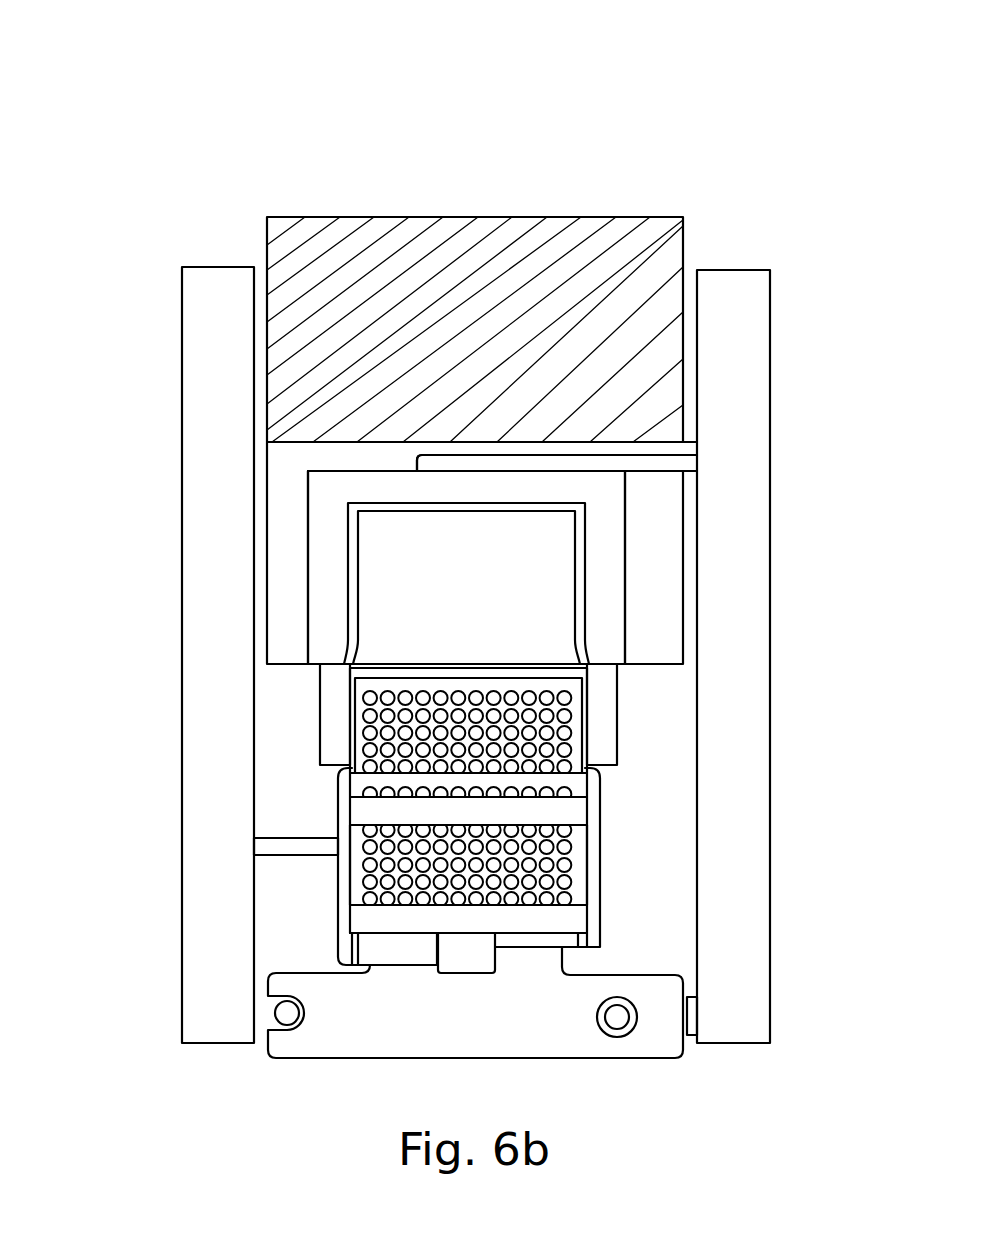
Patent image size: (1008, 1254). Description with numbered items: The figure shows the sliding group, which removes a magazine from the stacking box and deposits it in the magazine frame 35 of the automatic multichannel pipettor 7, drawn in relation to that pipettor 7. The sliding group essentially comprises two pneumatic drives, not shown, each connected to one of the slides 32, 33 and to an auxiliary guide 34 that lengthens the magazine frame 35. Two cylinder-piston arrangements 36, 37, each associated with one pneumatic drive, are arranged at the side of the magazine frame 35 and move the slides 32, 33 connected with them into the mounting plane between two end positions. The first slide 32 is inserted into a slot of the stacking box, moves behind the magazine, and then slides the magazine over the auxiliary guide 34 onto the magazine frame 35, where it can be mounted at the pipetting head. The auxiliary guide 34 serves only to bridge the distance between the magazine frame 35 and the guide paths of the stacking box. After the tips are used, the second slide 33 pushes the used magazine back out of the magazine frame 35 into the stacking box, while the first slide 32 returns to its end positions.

The automatic multichannel pipettor 7 is at (440, 287).
The first slide 32 is at (325, 847).
The second slide 33 is at (668, 463).
The auxiliary guide 34 is at (333, 692).
The magazine frame 35 is at (602, 553).
The cylinder-piston arrangement 36 is at (220, 852).
The cylinder-piston arrangement 37 is at (733, 872).